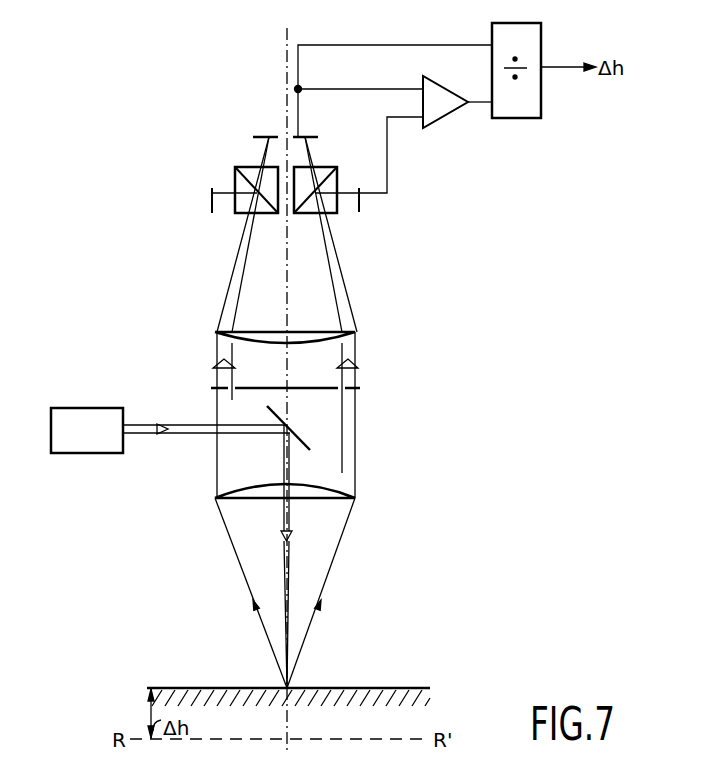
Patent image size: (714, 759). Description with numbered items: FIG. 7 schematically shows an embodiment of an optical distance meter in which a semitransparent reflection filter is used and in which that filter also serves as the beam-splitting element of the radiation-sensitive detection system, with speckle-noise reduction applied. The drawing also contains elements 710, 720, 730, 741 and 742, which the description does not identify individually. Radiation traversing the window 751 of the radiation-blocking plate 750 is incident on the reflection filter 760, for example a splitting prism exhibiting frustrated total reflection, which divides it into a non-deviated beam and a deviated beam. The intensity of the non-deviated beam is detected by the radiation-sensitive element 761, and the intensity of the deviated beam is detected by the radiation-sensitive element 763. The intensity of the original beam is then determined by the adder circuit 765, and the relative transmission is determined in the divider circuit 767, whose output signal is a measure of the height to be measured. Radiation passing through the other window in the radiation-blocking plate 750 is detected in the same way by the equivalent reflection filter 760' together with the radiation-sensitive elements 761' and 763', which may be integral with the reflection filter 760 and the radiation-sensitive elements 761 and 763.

The laser light source 710 is at (85, 442).
The beam splitter 720 is at (305, 437).
The surface / workpiece 730 is at (366, 688).
The objective lens 741 is at (327, 487).
The imaging lens 742 is at (318, 333).
The radiation-blocking plate 750 is at (325, 392).
The window 751 is at (349, 378).
The reflection filter 760 is at (338, 208).
The reflection filter 760' is at (235, 208).
The radiation-sensitive element 761 is at (322, 125).
The radiation-sensitive element 761' is at (238, 125).
The radiation-sensitive element 763 is at (391, 203).
The radiation-sensitive element 763' is at (184, 199).
The adder circuit 765 is at (452, 113).
The divider circuit 767 is at (515, 120).